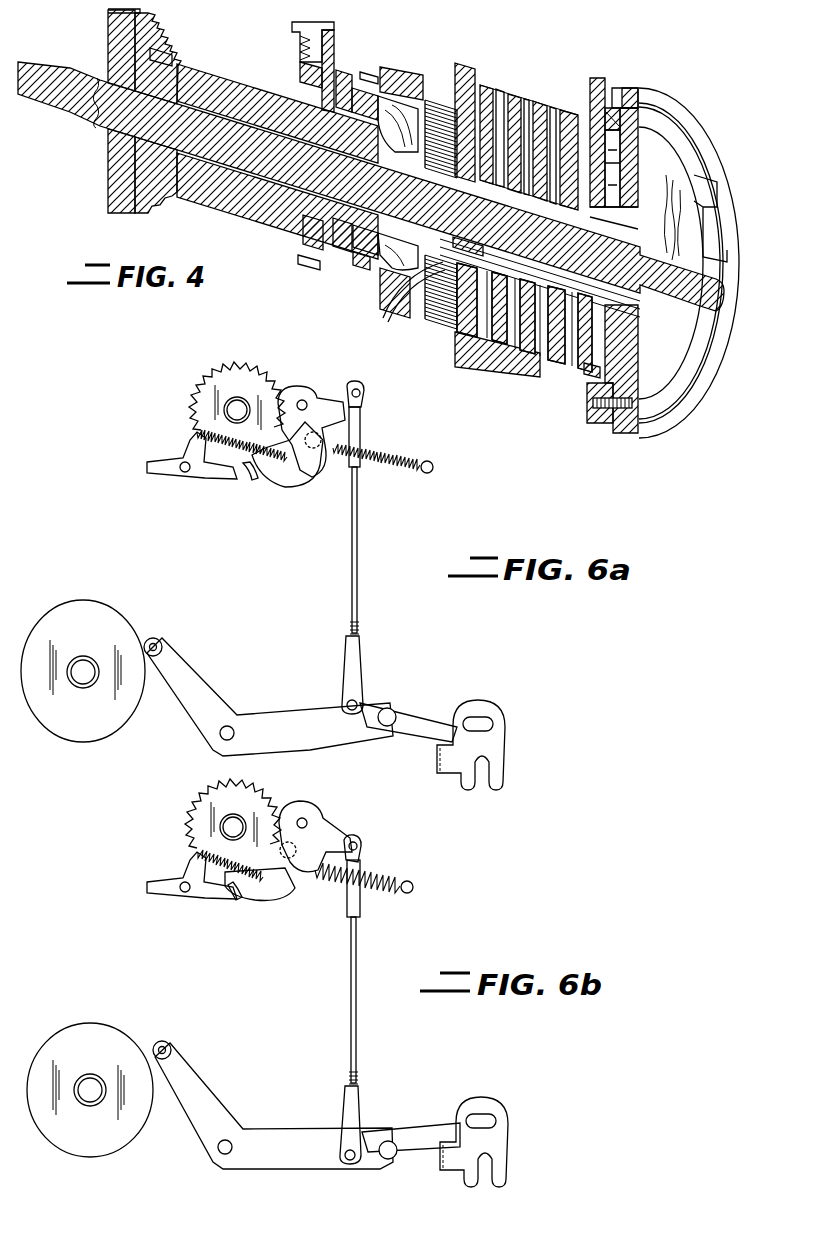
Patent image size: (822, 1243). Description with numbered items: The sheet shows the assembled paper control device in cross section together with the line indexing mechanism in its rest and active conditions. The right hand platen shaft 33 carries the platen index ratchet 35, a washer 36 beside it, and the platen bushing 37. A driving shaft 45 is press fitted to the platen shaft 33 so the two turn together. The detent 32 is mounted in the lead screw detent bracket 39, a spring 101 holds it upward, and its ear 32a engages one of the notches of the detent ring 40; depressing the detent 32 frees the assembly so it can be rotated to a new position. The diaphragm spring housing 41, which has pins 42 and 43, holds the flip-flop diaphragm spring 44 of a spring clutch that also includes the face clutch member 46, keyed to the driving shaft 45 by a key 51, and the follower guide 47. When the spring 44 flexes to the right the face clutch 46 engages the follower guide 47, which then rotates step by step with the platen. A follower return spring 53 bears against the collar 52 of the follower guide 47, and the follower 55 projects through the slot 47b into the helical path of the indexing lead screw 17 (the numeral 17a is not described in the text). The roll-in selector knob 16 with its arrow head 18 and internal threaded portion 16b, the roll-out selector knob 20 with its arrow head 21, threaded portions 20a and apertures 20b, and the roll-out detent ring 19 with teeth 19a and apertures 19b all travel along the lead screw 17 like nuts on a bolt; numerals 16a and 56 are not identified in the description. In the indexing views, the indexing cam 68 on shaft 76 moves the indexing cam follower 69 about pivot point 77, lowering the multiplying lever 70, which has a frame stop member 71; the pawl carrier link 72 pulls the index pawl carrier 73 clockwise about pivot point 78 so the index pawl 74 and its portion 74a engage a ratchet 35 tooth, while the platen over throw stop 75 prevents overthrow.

In FIG. 4, the platen shaft 33 is at (82, 78).
In FIG. 4, the washer 36 is at (130, 68).
In FIG. 4, the platen index ratchet 35 is at (175, 43).
In FIG. 6A, the platen index ratchet 35 is at (200, 380).
In FIG. 6B, the platen index ratchet 35 is at (200, 790).
In FIG. 4, the driving shaft 45 is at (197, 66).
In FIG. 4, the platen bushing 37 is at (236, 72).
In FIG. 4, the spring 101 is at (292, 52).
In FIG. 4, the lead screw detent bracket 39 is at (300, 72).
In FIG. 4, the detent 32 is at (332, 66).
In FIG. 4, the detent ring 40 is at (340, 80).
In FIG. 4, the pin 42 is at (366, 88).
In FIG. 4, the ear 32a is at (364, 72).
In FIG. 4, the diaphragm spring 44 is at (397, 67).
In FIG. 4, the housing flange 17a is at (460, 68).
In FIG. 4, the diaphragm spring housing 41 is at (412, 108).
In FIG. 4, the follower 55 is at (466, 98).
In FIG. 4, the clutch disc 16a is at (486, 90).
In FIG. 4, the internal threaded portion 16b is at (513, 82).
In FIG. 4, the roll-in selector knob and ratchet assembly 16 is at (537, 95).
In FIG. 4, the arrow head 18 is at (545, 105).
In FIG. 4, the friction disc 56 is at (560, 110).
In FIG. 4, the roll-out selector knob 20 is at (600, 86).
In FIG. 4, the roll-out detent ring 19 is at (648, 95).
In FIG. 4, the arrow head 21 is at (617, 123).
In FIG. 4, the projecting threaded portions 20a is at (610, 155).
In FIG. 4, the slot 47b is at (623, 227).
In FIG. 4, the indexing lead screw 17 is at (427, 317).
In FIG. 4, the follower guide 47 is at (653, 310).
In FIG. 4, the apertures 19b is at (612, 428).
In FIG. 4, the apertures 20b is at (598, 422).
In FIG. 4, the projecting teeth 19a is at (587, 370).
In FIG. 4, the follower return spring 53 is at (445, 342).
In FIG. 4, the collar 52 is at (400, 318).
In FIG. 4, the pin 43 is at (383, 300).
In FIG. 4, the key 51 is at (353, 262).
In FIG. 4, the face clutch member 46 is at (310, 267).
In FIG. 6A, the pivot point 78 is at (302, 400).
In FIG. 6B, the pivot point 78 is at (303, 818).
In FIG. 6A, the index pawl carrier 73 is at (318, 390).
In FIG. 6B, the index pawl carrier 73 is at (318, 815).
In FIG. 6A, the platen over throw stop 75 is at (200, 476).
In FIG. 6B, the platen over throw stop 75 is at (200, 896).
In FIG. 6A, the portion of pawl 74a is at (252, 470).
In FIG. 6B, the portion of pawl 74a is at (235, 892).
In FIG. 6A, the index pawl 74 is at (282, 482).
In FIG. 6B, the index pawl 74 is at (262, 897).
In FIG. 6A, the pawl carrier link 72 is at (362, 548).
In FIG. 6B, the pawl carrier link 72 is at (362, 968).
In FIG. 6A, the indexing cam 68 is at (105, 613).
In FIG. 6B, the indexing cam 68 is at (88, 1033).
In FIG. 6A, the shaft 76 is at (92, 655).
In FIG. 6B, the shaft 76 is at (84, 1076).
In FIG. 6A, the indexing cam follower 69 is at (205, 680).
In FIG. 6B, the indexing cam follower 69 is at (192, 1080).
In FIG. 6A, the pivot point 77 is at (220, 735).
In FIG. 6B, the pivot point 77 is at (218, 1150).
In FIG. 6A, the multiplying lever 70 is at (410, 718).
In FIG. 6B, the multiplying lever 70 is at (417, 1132).
In FIG. 6A, the stop member 71 is at (500, 713).
In FIG. 6B, the stop member 71 is at (498, 1103).